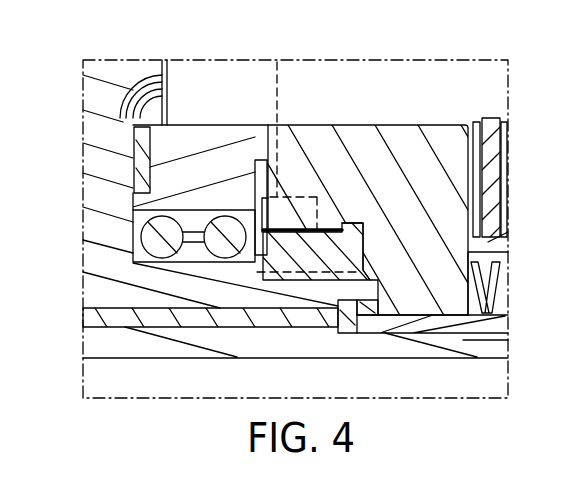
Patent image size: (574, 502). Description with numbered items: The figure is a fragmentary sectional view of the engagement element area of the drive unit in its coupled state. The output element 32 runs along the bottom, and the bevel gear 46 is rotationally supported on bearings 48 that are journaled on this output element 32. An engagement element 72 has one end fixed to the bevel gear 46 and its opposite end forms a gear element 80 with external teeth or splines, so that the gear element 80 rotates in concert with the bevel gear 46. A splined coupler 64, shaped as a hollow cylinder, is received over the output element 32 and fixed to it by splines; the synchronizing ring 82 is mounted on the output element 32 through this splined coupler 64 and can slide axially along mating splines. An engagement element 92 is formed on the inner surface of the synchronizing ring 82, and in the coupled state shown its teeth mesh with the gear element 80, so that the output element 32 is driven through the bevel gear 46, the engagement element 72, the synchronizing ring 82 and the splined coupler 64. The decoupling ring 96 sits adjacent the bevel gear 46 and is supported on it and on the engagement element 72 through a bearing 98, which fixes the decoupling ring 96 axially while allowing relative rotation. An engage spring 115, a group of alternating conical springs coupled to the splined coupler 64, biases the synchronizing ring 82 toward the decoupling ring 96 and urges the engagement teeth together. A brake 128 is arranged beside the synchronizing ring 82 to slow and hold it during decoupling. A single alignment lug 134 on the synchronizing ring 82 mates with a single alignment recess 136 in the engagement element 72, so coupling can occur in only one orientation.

The output element 32 is at (140, 350).
The bevel gear 46 is at (118, 270).
The bearings 48 is at (122, 316).
The splined coupler 64 is at (493, 336).
The engagement element 72 is at (275, 265).
The gear element 80 is at (340, 232).
The synchronizing ring 82 is at (425, 147).
The engagement element 92 is at (330, 222).
The decoupling ring 96 is at (153, 148).
The bearing 98 is at (153, 236).
The engage spring 115 is at (503, 285).
The brake 128 is at (490, 118).
The alignment lug 134 is at (277, 62).
The alignment recess 136 is at (293, 210).